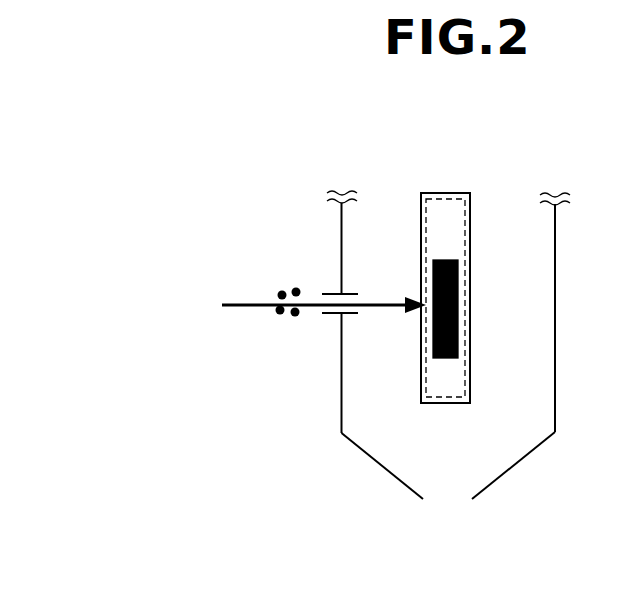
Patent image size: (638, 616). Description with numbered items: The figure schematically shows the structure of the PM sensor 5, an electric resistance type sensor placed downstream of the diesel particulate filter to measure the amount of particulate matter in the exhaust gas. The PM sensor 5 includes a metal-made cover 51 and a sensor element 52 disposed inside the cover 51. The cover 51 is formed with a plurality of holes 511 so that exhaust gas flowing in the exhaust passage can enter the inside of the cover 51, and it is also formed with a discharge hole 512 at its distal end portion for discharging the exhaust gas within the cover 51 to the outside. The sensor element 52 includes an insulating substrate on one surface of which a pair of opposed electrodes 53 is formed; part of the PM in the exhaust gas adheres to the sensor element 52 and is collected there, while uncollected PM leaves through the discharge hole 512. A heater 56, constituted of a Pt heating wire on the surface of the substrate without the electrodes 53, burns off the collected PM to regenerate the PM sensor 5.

The PM sensor 5 is at (226, 140).
The cover 51 is at (336, 216).
The holes 511 is at (343, 314).
The discharge hole 512 is at (445, 489).
The sensor element 52 is at (445, 193).
The electrodes 53 is at (457, 302).
The heater 56 is at (466, 222).